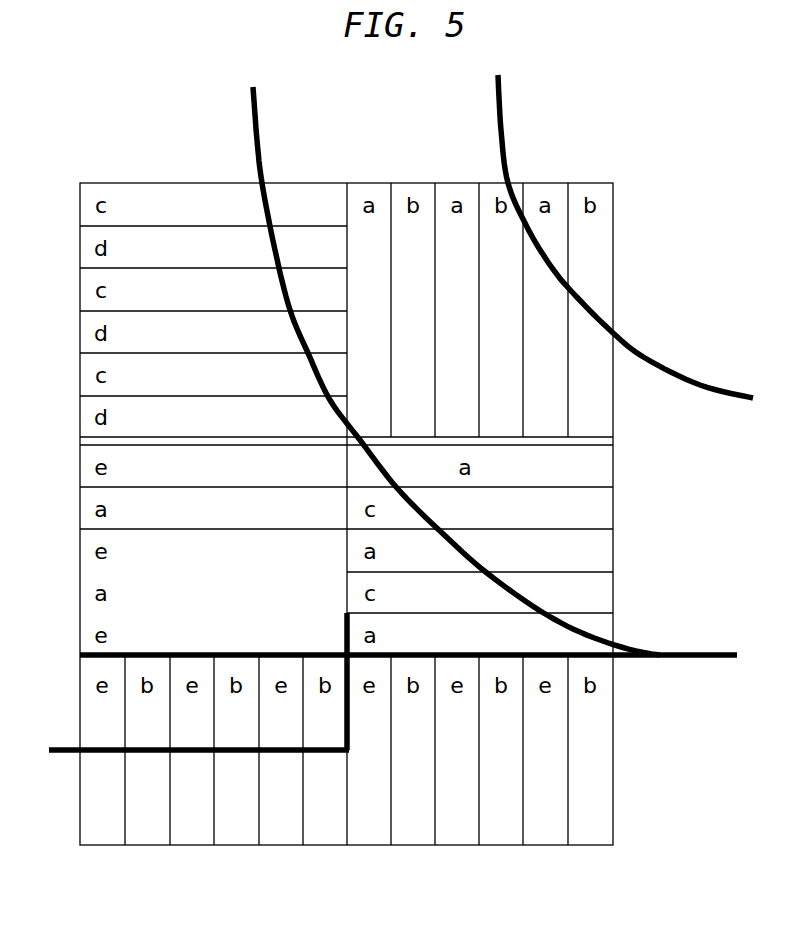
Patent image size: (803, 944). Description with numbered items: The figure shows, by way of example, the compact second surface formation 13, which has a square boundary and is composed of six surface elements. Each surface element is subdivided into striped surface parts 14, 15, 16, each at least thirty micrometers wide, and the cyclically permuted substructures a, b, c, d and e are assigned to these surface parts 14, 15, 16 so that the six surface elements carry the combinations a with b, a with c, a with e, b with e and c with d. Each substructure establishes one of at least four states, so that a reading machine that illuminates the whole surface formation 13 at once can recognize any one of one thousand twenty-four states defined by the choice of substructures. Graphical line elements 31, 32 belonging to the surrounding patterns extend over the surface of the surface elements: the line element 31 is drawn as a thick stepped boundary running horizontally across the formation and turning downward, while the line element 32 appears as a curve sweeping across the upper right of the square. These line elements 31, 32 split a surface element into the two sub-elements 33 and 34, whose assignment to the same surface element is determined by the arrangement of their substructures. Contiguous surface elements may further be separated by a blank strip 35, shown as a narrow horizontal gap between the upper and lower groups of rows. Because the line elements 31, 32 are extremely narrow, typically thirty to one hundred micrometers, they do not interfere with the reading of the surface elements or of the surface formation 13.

The second surface formation 13 is at (614, 262).
The surface part 14 is at (367, 196).
The surface part 15 is at (597, 563).
The surface part 16 is at (597, 605).
The graphical line element 31 is at (597, 628).
The graphical line element 32 is at (502, 121).
The sub-element 33 is at (185, 196).
The sub-element 34 is at (297, 196).
The blank strip 35 is at (614, 444).